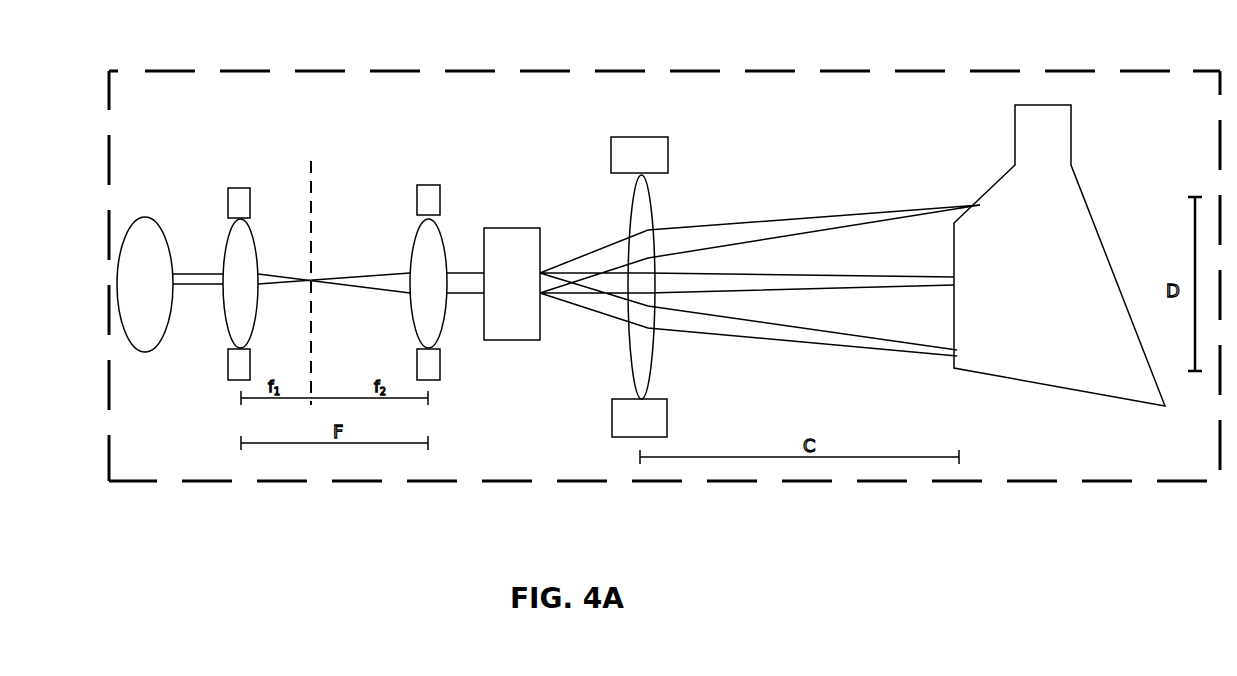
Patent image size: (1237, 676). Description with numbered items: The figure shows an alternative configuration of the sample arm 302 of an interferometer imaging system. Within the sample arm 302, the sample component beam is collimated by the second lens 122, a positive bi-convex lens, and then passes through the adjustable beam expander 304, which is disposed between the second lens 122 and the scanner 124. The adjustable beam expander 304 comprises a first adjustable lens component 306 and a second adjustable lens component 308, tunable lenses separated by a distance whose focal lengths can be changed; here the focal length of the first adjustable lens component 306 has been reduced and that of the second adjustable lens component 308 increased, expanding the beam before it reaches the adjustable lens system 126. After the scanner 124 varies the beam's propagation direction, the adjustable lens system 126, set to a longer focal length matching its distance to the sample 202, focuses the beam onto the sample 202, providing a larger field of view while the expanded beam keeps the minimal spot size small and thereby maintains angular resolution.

The second lens 122 is at (167, 228).
The scanner 124 is at (542, 235).
The adjustable lens system 126 is at (653, 221).
The sample 202 is at (1013, 163).
The sample arm 302 is at (138, 483).
The adjustable beam expander 304 is at (287, 163).
The first adjustable lens component 306 is at (256, 244).
The second adjustable lens component 308 is at (410, 242).